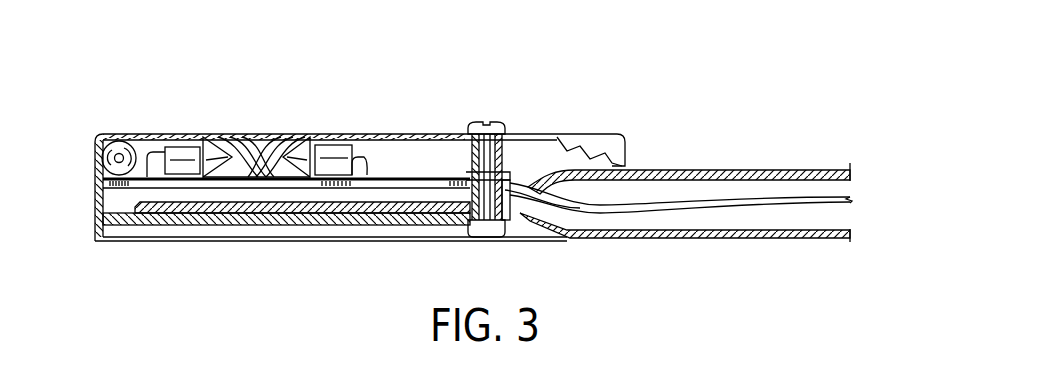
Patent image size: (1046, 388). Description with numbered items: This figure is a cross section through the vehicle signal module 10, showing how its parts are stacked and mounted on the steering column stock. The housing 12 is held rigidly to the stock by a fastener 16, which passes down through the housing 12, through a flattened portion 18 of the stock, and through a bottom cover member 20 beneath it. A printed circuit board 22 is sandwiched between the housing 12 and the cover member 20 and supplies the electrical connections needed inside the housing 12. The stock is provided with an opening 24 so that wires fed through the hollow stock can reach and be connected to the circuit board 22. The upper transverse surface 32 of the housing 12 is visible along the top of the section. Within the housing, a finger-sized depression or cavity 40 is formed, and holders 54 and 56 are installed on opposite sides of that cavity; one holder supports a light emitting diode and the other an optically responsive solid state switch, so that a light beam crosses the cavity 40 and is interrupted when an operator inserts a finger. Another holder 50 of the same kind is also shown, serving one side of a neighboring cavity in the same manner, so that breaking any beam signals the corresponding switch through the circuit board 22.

The vehicle signal module 10 is at (662, 92).
The housing 12 is at (604, 134).
The fastener 16 is at (497, 124).
The flattened portion 18 is at (373, 203).
The bottom cover member 20 is at (143, 218).
The printed circuit board 22 is at (433, 177).
The opening 24 is at (522, 197).
The transverse surface 32 is at (375, 134).
The depression 40 is at (256, 172).
The holder 50 is at (122, 150).
The holder 54 is at (183, 152).
The holder 56 is at (332, 160).